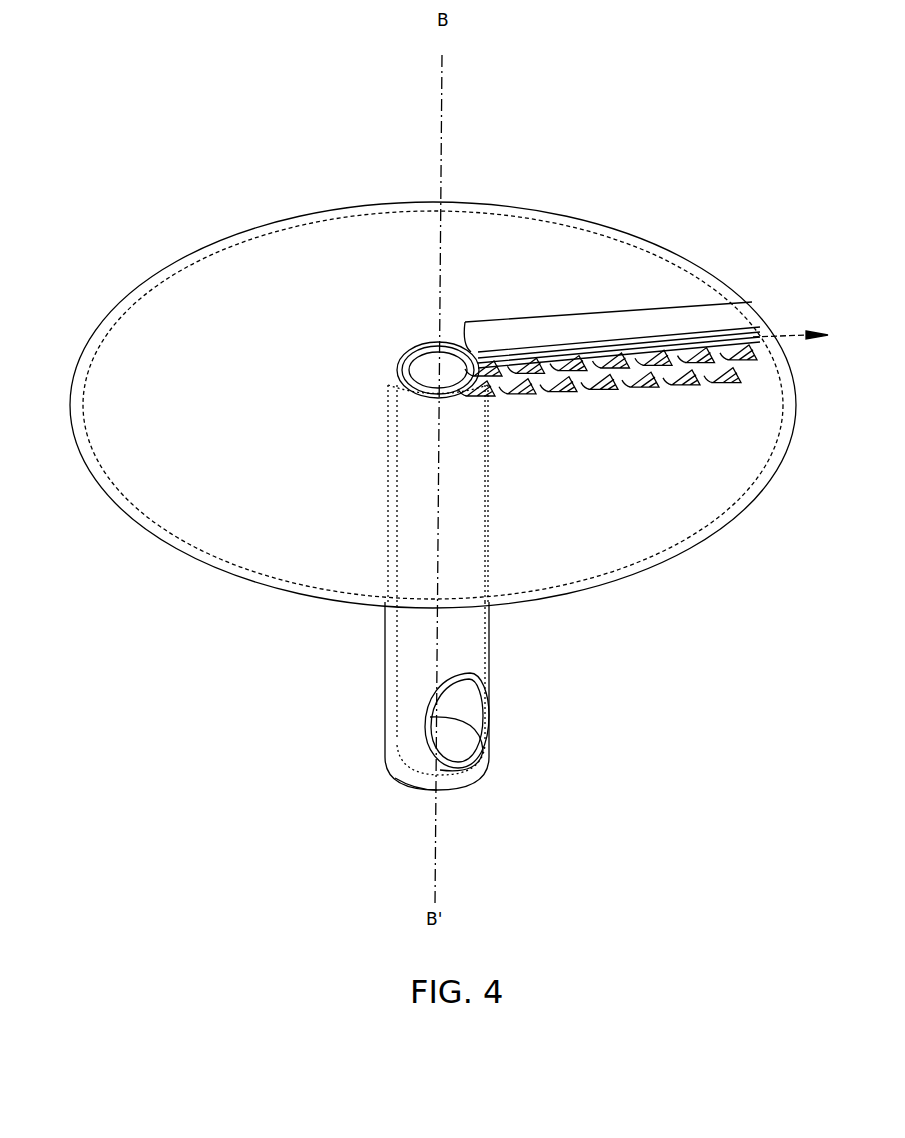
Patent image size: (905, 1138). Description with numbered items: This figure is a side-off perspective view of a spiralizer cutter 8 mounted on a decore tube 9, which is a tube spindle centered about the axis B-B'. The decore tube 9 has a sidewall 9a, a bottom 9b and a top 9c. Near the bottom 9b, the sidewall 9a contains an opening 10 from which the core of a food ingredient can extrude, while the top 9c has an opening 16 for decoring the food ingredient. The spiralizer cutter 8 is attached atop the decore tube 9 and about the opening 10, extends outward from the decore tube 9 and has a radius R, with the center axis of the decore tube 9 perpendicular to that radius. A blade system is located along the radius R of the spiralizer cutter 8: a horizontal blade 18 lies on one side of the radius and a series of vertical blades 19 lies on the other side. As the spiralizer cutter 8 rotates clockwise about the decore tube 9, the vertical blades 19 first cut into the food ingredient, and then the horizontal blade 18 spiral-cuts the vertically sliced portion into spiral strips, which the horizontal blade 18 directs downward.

The spiralizer cutter 8 is at (187, 418).
The decore tube 9 is at (386, 712).
The sidewall 9a is at (468, 645).
The bottom 9b is at (413, 790).
The top 9c is at (408, 358).
The opening 10 is at (473, 720).
The opening 16 is at (430, 362).
The horizontal blade 18 is at (613, 330).
The vertical blades 19 is at (493, 362).